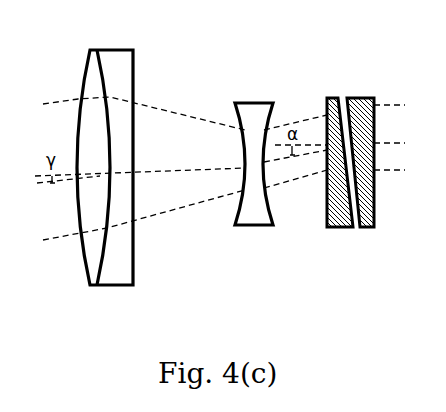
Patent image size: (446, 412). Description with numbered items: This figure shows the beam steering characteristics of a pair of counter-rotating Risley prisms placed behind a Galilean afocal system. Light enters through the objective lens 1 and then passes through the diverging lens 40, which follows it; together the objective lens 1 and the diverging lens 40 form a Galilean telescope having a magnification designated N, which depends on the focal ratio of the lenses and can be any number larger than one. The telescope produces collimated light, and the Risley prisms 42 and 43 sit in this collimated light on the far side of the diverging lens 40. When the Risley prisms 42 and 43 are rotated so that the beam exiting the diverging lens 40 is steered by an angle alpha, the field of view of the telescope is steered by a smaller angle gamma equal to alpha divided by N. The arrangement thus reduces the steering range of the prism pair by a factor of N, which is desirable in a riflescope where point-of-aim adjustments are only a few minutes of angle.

The objective lens 1 is at (134, 82).
The diverging lens 40 is at (242, 228).
The Risley prism 42 is at (338, 229).
The Risley prism 43 is at (370, 229).